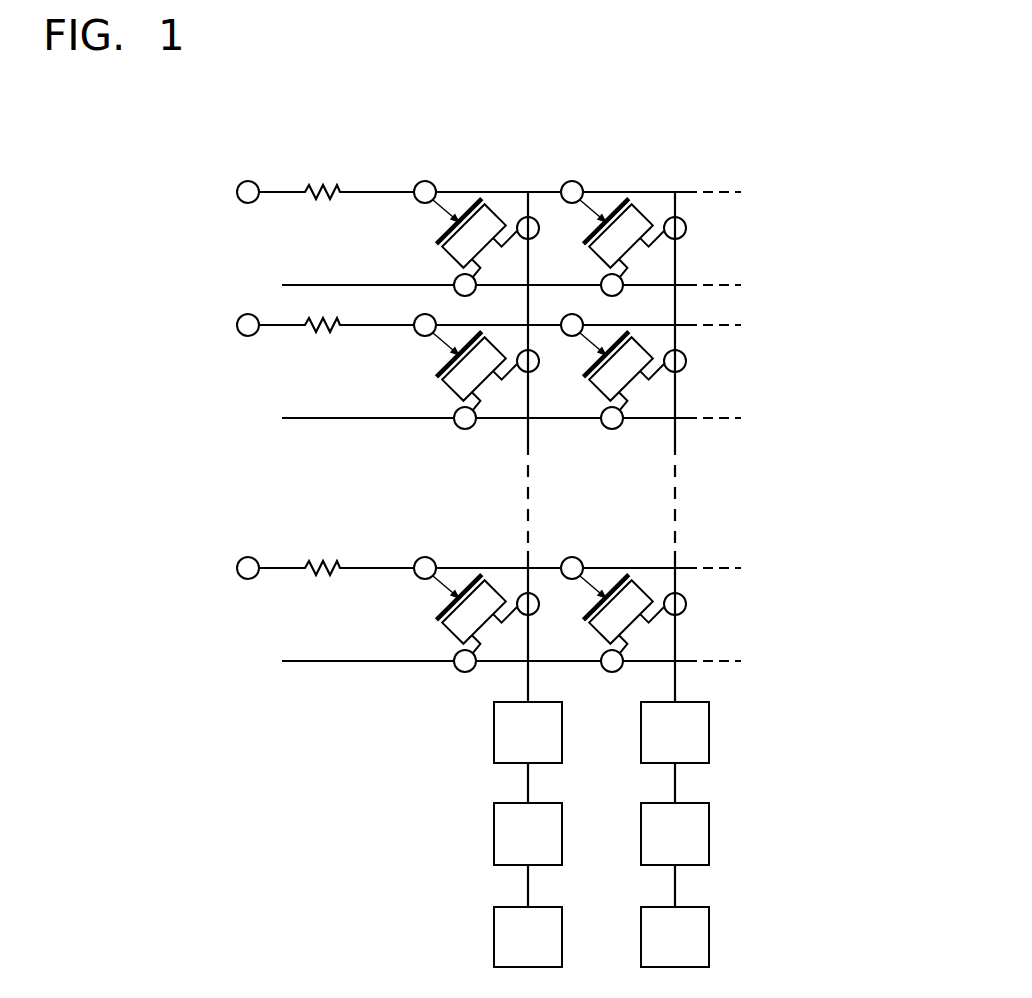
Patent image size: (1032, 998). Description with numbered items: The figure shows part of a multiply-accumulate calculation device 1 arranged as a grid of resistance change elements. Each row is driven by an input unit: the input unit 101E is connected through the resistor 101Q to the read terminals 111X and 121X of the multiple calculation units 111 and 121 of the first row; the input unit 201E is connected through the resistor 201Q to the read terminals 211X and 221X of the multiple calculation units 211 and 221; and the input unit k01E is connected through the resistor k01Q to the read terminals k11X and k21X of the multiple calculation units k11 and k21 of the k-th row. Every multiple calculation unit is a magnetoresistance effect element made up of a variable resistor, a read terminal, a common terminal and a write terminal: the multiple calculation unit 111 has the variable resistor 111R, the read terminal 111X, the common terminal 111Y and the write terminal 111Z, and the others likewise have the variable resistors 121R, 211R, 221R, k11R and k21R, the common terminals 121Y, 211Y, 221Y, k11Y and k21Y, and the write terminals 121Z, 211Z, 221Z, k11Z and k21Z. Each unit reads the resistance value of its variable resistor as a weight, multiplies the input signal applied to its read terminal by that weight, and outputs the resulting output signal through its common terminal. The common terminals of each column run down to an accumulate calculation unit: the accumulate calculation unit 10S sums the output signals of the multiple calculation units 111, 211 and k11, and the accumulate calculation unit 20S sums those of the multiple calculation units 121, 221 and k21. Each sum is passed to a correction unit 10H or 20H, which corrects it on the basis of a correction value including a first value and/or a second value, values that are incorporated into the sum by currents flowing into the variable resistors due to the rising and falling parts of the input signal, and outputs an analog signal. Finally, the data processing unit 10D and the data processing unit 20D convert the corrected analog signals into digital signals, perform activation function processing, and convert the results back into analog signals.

The multiply-accumulate calculation device 1 is at (807, 140).
The input unit 101E is at (237, 191).
The resistor 101Q is at (338, 192).
The multiple calculation unit 111 is at (83, 167).
The read terminal 111X is at (418, 200).
The common terminal 111Y is at (520, 220).
The variable resistor 111R is at (457, 252).
The write terminal 111Z is at (458, 276).
The multiple calculation unit 121 is at (878, 175).
The read terminal 121X is at (579, 183).
The common terminal 121Y is at (686, 224).
The variable resistor 121R is at (627, 242).
The write terminal 121Z is at (621, 278).
The input unit 201E is at (173, 322).
The resistor 201Q is at (399, 321).
The multiple calculation unit 211 is at (309, 443).
The read terminal 211X is at (324, 344).
The common terminal 211Y is at (313, 446).
The variable resistor 211R is at (302, 382).
The write terminal 211Z is at (344, 435).
The multiple calculation unit 221 is at (748, 439).
The read terminal 221X is at (717, 333).
The common terminal 221Y is at (768, 446).
The variable resistor 221R is at (729, 371).
The write terminal 221Z is at (737, 424).
The input unit k01E is at (173, 542).
The resistor k01Q is at (399, 560).
The multiple calculation unit k11 is at (309, 622).
The read terminal k11X is at (324, 576).
The common terminal k11Y is at (313, 635).
The variable resistor k11R is at (302, 614).
The write terminal k11Z is at (344, 652).
The multiple calculation unit k21 is at (749, 621).
The read terminal k21X is at (717, 570).
The common terminal k21Y is at (768, 635).
The variable resistor k21R is at (729, 614).
The write terminal k21Z is at (737, 658).
The accumulate calculation unit 10S is at (494, 729).
The correction unit 10H is at (494, 831).
The data processing unit 10D is at (494, 931).
The accumulate calculation unit 20S is at (709, 733).
The correction unit 20H is at (709, 834).
The data processing unit 20D is at (709, 934).